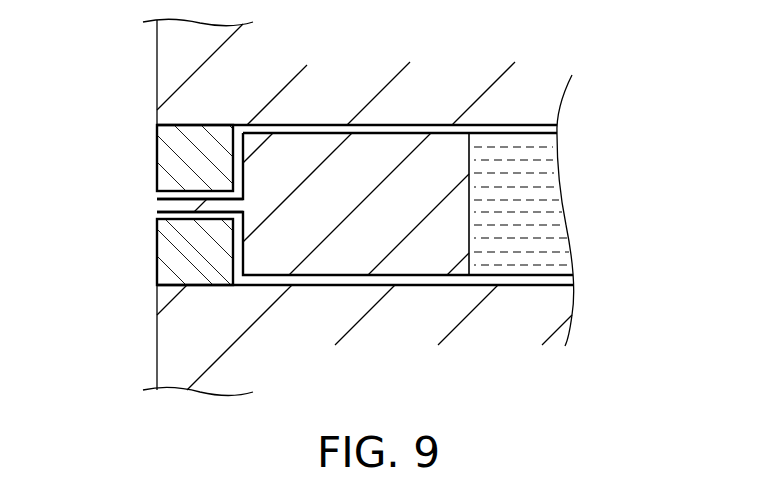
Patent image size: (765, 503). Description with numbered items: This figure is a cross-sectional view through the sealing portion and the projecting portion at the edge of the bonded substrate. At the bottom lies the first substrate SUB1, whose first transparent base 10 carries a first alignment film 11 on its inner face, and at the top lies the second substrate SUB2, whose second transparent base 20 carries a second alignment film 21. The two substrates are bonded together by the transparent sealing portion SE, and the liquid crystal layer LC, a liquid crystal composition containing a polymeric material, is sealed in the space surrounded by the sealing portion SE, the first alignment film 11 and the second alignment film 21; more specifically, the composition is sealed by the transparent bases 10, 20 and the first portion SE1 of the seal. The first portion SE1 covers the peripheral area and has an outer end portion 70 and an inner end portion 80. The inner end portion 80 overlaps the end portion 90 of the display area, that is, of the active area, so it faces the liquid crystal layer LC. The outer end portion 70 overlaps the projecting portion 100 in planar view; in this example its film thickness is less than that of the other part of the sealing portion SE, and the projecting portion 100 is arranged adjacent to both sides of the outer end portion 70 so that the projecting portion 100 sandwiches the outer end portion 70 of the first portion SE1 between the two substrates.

The second substrate SUB2 is at (157, 72).
The first substrate SUB1 is at (157, 351).
The second transparent base 20 is at (550, 103).
The first transparent base 10 is at (560, 298).
The second alignment film 21 is at (437, 125).
The first portion SE1 is at (292, 133).
The sealing portion SE is at (337, 150).
The first alignment film 11 is at (420, 287).
The projecting portion 100 is at (157, 158).
The outer end portion 70 is at (157, 209).
The inner end portion 80 is at (472, 168).
The end portion of the display area 90 is at (469, 222).
The liquid crystal layer LC is at (556, 168).